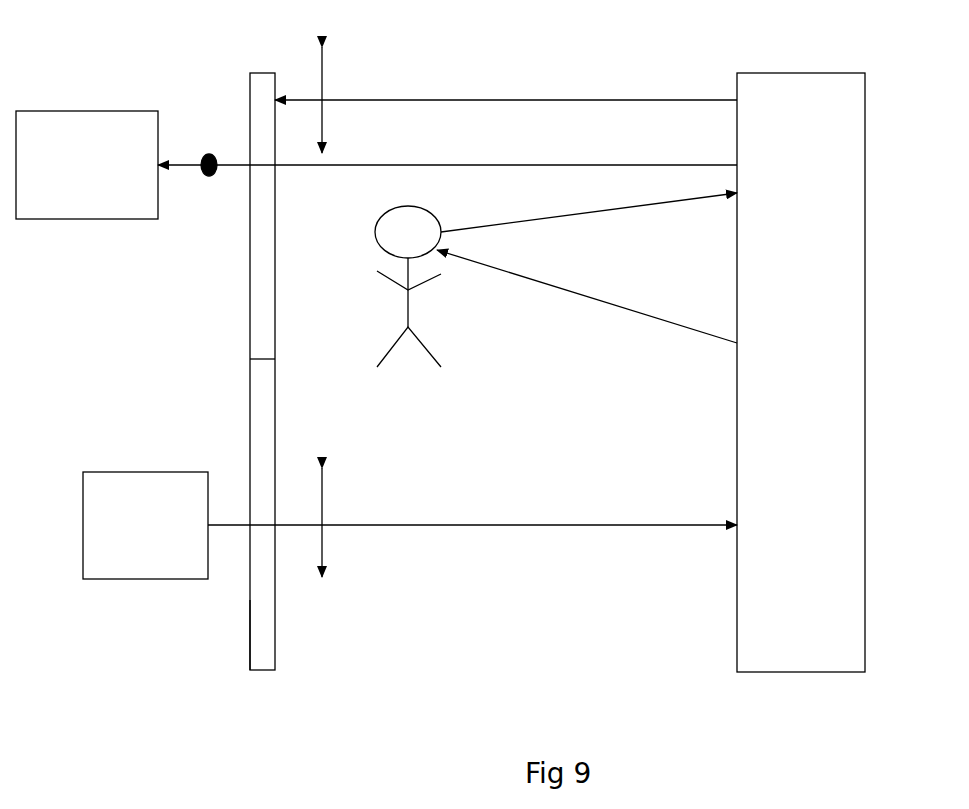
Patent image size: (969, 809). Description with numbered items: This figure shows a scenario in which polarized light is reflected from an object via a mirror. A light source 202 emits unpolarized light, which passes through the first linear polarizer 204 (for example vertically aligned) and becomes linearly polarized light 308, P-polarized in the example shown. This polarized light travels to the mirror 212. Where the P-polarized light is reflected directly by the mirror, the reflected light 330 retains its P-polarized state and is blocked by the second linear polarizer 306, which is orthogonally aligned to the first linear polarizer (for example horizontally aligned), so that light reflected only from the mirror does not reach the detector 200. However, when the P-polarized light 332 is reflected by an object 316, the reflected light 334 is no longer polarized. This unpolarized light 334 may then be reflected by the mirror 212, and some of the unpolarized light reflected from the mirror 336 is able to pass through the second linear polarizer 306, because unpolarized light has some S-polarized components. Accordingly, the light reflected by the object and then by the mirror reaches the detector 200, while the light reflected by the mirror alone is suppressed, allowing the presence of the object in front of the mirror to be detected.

The detector 200 is at (87, 110).
The light source 202 is at (145, 471).
The first linear polarizer 204 is at (260, 672).
The mirror 212 is at (798, 72).
The second linear polarizer 306 is at (257, 72).
The linearly polarized light 308 is at (437, 524).
The object 316 is at (448, 292).
The reflected light from the mirror 330 is at (435, 100).
The P-polarized light incident on the object 332 is at (667, 330).
The unpolarized light reflected from the object 334 is at (685, 205).
The unpolarized light reflected from the mirror 336 is at (365, 167).